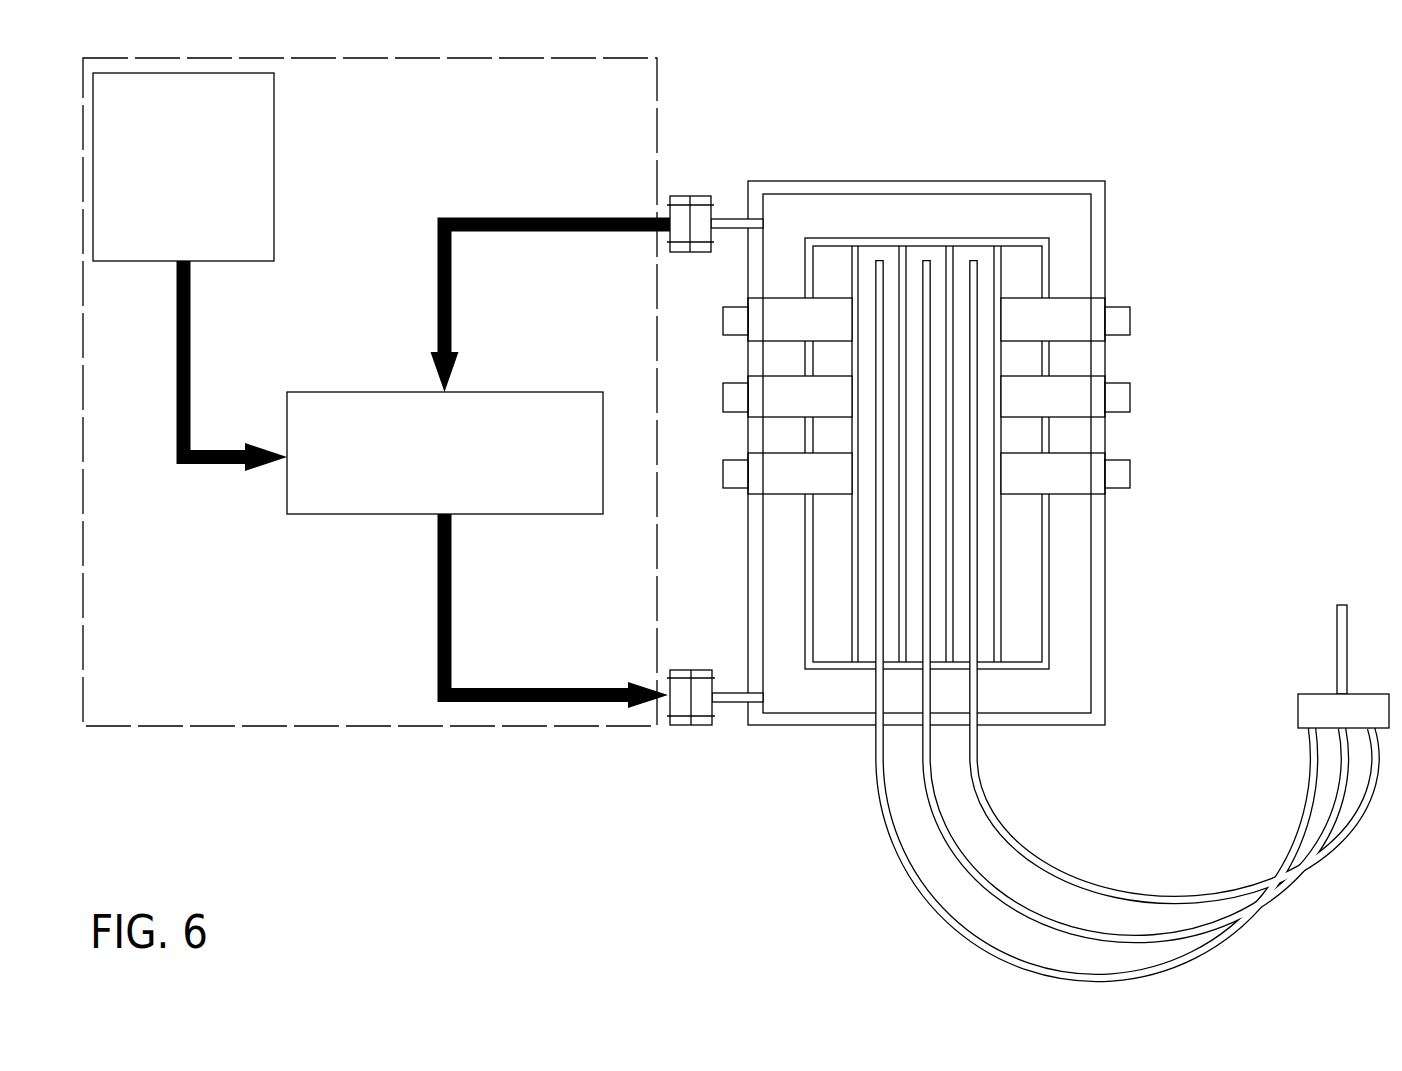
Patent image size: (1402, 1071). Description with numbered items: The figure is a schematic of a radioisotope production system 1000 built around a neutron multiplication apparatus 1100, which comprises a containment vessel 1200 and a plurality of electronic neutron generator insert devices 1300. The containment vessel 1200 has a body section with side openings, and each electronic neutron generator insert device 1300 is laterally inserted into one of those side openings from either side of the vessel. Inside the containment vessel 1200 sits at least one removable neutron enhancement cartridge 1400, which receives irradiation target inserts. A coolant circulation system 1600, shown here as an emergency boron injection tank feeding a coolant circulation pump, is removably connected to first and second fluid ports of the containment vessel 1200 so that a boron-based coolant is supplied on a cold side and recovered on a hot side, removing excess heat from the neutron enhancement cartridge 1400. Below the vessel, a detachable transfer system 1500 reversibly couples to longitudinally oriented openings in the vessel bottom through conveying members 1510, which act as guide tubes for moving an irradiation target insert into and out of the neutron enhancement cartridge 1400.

The radioisotope production system 1000 is at (1028, 527).
The neutron multiplication apparatus 1100 is at (853, 173).
The containment vessel 1200 is at (1108, 231).
The electronic neutron generator insert device 1300 is at (1130, 322).
The removable neutron enhancement cartridge 1400 is at (1007, 613).
The detachable transfer system 1500 is at (1323, 683).
The conveying member 1510 is at (1052, 862).
The coolant circulation system 1600 is at (405, 735).